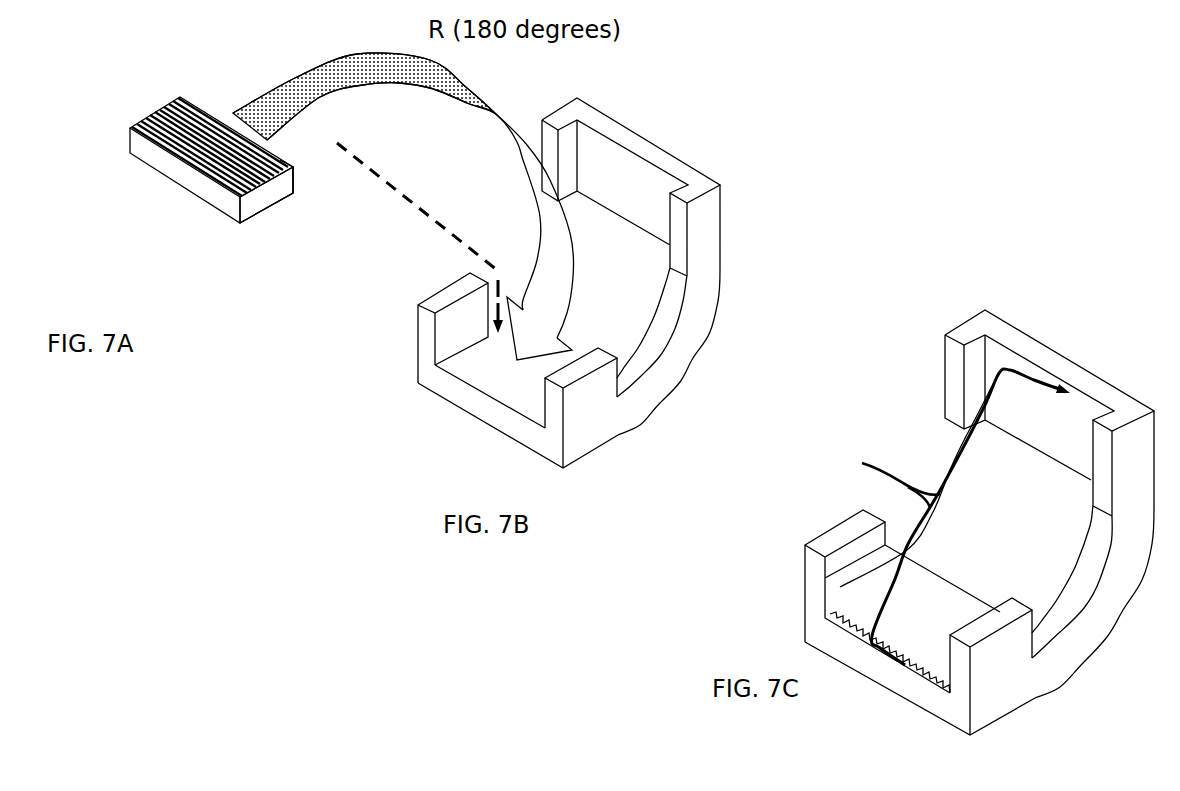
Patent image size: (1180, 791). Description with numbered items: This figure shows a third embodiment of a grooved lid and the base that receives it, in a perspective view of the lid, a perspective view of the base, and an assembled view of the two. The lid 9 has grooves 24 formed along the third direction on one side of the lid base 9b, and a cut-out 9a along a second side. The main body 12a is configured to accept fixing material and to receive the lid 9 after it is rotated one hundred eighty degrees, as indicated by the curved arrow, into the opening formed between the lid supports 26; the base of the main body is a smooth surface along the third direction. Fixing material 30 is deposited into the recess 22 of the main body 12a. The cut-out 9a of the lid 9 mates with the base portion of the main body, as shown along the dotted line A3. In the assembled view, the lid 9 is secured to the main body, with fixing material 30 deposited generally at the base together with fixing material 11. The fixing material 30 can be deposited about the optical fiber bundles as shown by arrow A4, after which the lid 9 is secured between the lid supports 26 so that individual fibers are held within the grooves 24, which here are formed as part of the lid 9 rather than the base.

In FIG. 7A, the lid 9 is at (115, 92).
In FIG. 7C, the lid 9 is at (920, 607).
In FIG. 7A, the cut-out 9a is at (295, 151).
In FIG. 7A, the lid base 9b is at (262, 207).
In FIG. 7A, the grooves 24 is at (239, 203).
In FIG. 7B, the main body 12a is at (750, 178).
In FIG. 7C, the fixing material 11 is at (946, 277).
In FIG. 7B, the lid supports 26 is at (400, 298).
In FIG. 7B, the fixing material 30 is at (626, 283).
In FIG. 7C, the fixing material 30 is at (1044, 530).
In FIG. 7B, the recess 22 is at (590, 337).
In FIG. 7A, the dotted line A3 is at (420, 238).
In FIG. 7C, the arrow A4 is at (881, 475).